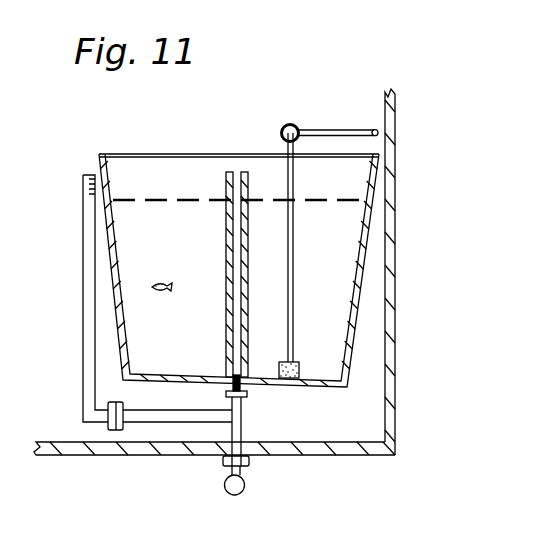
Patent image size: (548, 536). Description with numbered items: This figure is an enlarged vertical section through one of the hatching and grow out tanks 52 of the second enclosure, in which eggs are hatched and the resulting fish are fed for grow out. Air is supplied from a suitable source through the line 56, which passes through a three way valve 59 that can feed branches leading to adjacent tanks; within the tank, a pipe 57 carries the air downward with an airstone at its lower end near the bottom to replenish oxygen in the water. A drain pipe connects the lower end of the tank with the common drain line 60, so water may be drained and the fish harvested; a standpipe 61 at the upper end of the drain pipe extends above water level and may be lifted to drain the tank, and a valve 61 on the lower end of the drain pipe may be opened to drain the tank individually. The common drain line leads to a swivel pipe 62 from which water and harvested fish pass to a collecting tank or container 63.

The tank 52 is at (98, 163).
The line 56 is at (375, 127).
The pipe 57 is at (293, 254).
The three way valve 59 is at (283, 128).
The common drain line 60 is at (153, 423).
The valve 61 is at (246, 489).
The pipe 62 is at (82, 253).
The tank or container 63 is at (226, 249).